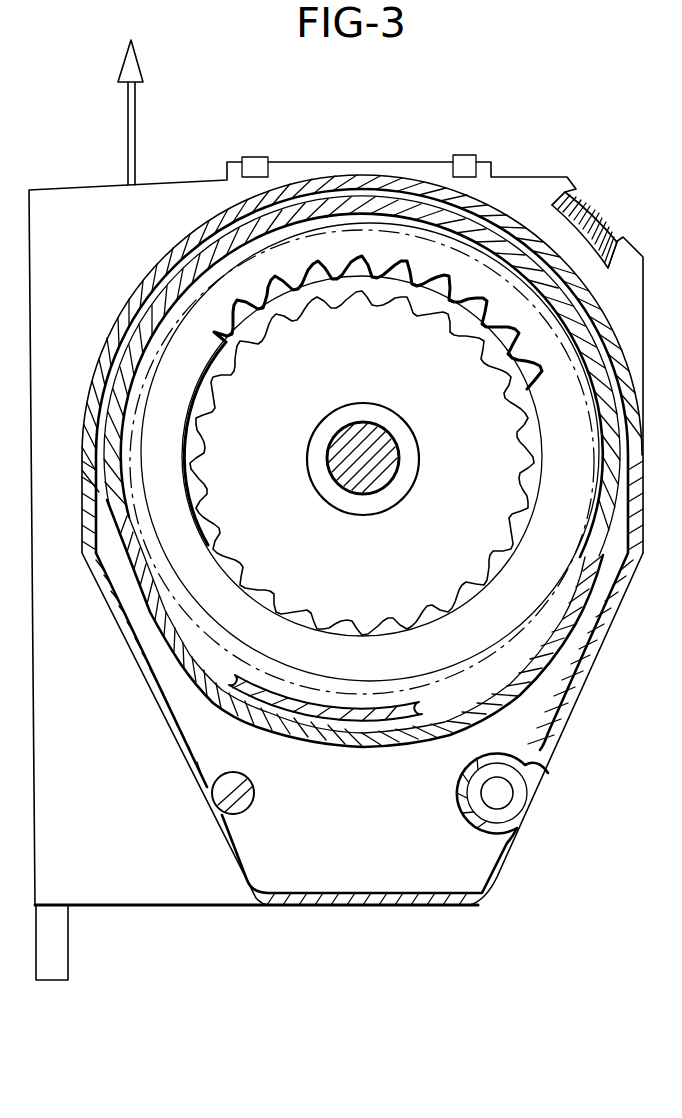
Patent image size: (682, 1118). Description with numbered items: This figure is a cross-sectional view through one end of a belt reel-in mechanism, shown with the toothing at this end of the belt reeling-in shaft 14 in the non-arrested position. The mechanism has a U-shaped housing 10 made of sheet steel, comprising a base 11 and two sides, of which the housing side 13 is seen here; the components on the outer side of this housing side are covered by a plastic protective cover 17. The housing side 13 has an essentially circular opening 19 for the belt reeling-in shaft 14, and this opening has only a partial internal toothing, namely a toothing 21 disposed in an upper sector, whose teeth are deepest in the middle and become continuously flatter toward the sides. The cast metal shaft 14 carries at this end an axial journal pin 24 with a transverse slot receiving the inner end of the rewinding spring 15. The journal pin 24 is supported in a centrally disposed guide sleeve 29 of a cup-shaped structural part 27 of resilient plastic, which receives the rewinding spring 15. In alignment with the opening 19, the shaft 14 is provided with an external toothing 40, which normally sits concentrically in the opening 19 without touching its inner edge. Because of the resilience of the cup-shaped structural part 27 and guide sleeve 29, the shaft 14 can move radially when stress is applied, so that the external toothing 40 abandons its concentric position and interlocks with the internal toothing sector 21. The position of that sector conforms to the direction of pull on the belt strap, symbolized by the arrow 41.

The housing 10 is at (148, 868).
The base 11 is at (68, 965).
The housing side 13 is at (113, 208).
The belt reeling-in shaft 14 is at (480, 520).
The rewinding spring 15 is at (248, 287).
The protective cover 17 is at (565, 722).
The opening 19 is at (433, 617).
The toothing 21 is at (480, 326).
The journal pin 24 is at (380, 433).
The cup-shaped structural part 27 is at (493, 238).
The guide sleeve 29 is at (387, 500).
The external toothing 40 is at (505, 408).
The arrow 41 is at (128, 108).